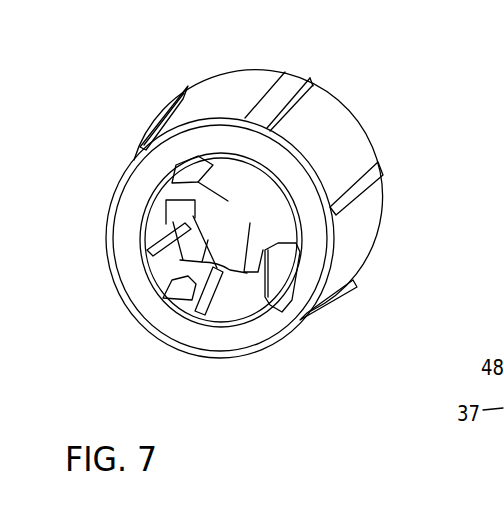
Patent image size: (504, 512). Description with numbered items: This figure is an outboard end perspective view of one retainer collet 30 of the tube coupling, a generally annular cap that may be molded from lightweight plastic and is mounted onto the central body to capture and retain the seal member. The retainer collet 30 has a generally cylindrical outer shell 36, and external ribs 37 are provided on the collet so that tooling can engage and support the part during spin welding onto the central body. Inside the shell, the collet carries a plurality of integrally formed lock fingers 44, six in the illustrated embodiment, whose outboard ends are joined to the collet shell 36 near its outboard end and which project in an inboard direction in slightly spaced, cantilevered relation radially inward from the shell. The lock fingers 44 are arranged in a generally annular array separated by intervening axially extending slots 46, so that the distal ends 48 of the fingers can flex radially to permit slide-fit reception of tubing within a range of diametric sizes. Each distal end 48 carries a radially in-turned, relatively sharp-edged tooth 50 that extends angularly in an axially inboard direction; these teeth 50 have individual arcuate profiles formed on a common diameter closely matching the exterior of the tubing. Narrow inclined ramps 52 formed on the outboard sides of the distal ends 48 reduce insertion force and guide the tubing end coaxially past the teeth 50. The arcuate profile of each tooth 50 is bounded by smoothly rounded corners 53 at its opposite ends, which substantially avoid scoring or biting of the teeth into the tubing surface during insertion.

The retainer collet 30 is at (390, 97).
The outer shell 36 is at (210, 90).
The external ribs 37 is at (285, 85).
The lock fingers 44 is at (187, 297).
The axially extending slots 46 is at (185, 301).
The distal ends 48 is at (250, 223).
The teeth 50 is at (190, 219).
The inclined ramps 52 is at (155, 241).
The rounded corners 53 is at (226, 201).